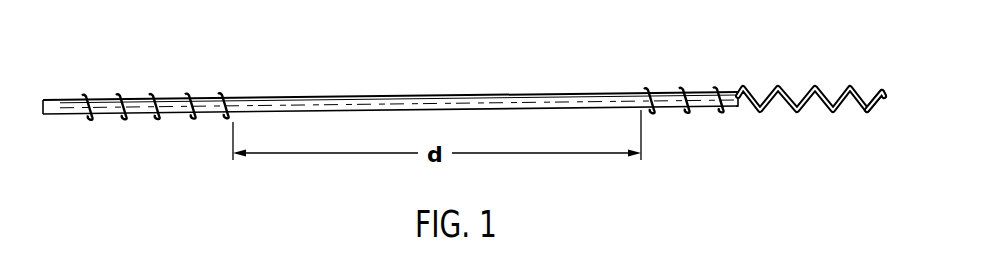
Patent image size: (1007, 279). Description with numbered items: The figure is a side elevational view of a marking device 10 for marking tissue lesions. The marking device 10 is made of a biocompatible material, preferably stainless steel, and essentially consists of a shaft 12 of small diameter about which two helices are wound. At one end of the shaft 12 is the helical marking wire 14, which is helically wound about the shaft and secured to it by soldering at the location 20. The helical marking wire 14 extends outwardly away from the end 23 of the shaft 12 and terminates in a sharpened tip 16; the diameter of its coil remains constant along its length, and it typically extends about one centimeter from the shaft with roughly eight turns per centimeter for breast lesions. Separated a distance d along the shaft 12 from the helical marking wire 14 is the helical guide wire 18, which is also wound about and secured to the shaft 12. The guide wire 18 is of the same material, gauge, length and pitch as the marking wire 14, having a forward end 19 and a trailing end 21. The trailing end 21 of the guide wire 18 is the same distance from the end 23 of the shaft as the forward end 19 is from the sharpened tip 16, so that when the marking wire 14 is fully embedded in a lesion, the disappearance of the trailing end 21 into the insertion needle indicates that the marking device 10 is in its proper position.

The marking device 10 is at (478, 116).
The shaft 12 is at (447, 96).
The helical marking wire 14 is at (816, 88).
The sharpened tip 16 is at (883, 100).
The helical guide wire 18 is at (170, 106).
The forward end 19 is at (230, 97).
The securing location 20 is at (713, 93).
The trailing end 21 is at (80, 97).
The end of shaft 23 is at (742, 110).